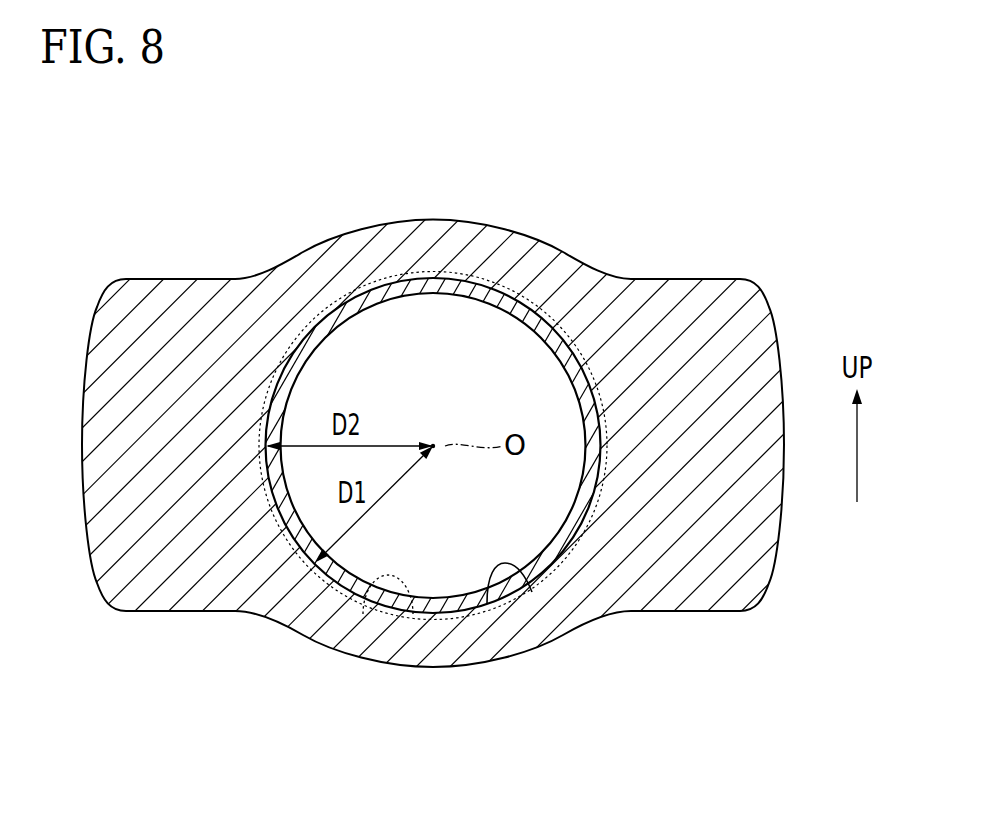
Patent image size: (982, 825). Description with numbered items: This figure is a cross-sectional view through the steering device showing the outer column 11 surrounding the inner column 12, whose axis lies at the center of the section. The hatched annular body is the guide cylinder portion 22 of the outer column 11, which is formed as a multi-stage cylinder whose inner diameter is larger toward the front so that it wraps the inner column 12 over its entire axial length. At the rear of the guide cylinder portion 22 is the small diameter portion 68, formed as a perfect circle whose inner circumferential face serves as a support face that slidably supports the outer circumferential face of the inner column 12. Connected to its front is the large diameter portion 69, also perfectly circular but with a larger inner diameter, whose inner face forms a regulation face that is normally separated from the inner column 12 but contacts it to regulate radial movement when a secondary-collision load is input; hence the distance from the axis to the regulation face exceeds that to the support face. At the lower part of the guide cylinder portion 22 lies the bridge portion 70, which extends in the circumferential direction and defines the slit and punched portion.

The outer column 11 is at (789, 324).
The inner column 12 is at (530, 320).
The guide cylinder portion 22 is at (768, 535).
The small diameter portion 68 is at (532, 592).
The large diameter portion 69 is at (362, 590).
The bridge portion 70 is at (382, 650).